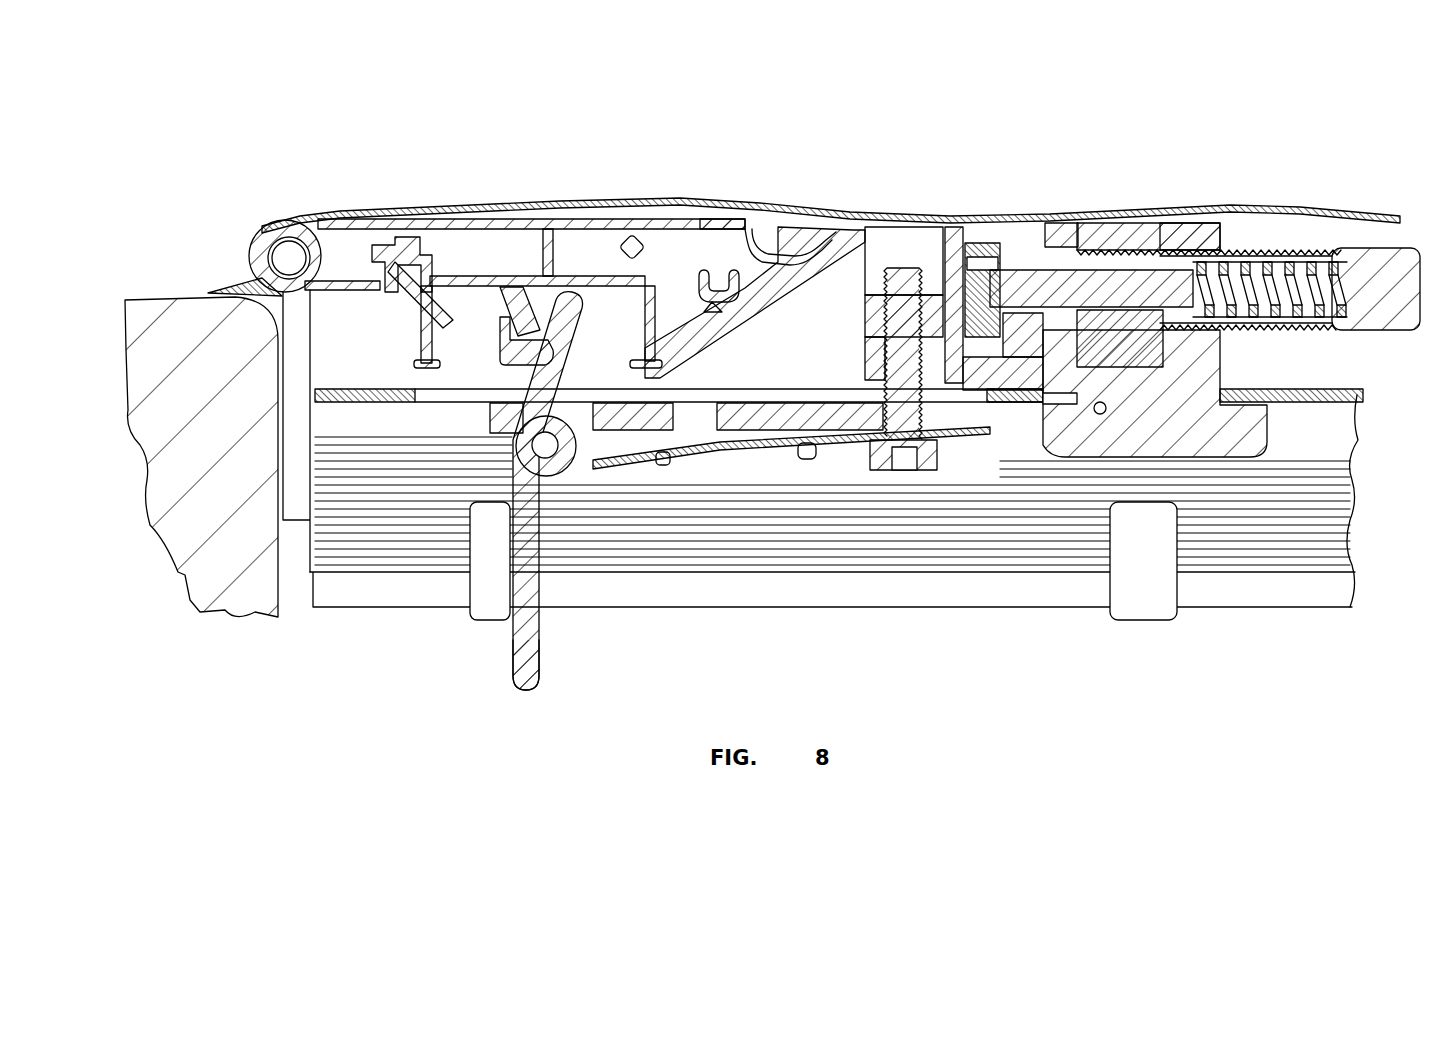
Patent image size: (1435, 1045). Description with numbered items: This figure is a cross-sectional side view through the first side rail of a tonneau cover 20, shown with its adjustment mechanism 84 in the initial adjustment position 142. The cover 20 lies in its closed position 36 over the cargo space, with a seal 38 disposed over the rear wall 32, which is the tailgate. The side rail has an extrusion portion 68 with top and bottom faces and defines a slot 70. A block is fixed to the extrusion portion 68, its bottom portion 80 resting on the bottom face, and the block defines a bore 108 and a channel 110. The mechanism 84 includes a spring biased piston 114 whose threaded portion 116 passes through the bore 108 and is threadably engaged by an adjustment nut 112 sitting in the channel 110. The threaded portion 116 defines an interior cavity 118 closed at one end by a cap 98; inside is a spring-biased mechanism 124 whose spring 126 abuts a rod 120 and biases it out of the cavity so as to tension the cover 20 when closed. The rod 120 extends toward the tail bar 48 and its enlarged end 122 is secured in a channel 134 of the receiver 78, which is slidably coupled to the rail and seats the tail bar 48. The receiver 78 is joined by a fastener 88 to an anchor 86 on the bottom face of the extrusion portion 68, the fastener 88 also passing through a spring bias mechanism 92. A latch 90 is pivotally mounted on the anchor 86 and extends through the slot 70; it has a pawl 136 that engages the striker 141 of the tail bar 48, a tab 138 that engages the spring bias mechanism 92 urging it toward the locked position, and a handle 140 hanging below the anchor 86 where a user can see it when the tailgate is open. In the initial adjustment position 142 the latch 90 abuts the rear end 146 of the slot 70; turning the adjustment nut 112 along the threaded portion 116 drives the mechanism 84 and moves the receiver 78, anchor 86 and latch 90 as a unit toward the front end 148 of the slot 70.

The tonneau cover 20 is at (853, 215).
The rear wall 32 is at (232, 573).
The closed position 36 is at (342, 190).
The seal 38 is at (236, 290).
The tail bar 48 is at (743, 228).
The extrusion portion 68 is at (372, 405).
The slot 70 is at (463, 400).
The receiver 78 is at (876, 252).
The bottom portion 80 is at (1242, 398).
The mechanism 84 is at (1012, 233).
The anchor 86 is at (752, 417).
The fastener 88 is at (923, 463).
The latch 90 is at (525, 492).
The spring bias mechanism 92 is at (713, 447).
The cap 98 is at (1375, 258).
The bore 108 is at (1062, 235).
The channel 110 is at (1115, 347).
The adjustment nut 112 is at (1145, 245).
The spring biased piston 114 is at (1117, 245).
The threaded portion 116 is at (1250, 265).
The interior cavity 118 is at (1320, 265).
The rod 120 is at (1036, 248).
The enlarged end 122 is at (975, 232).
The spring-biased mechanism 124 is at (1295, 268).
The spring 126 is at (1332, 292).
The channel 134 is at (1045, 425).
The pawl 136 is at (550, 305).
The tab 138 is at (593, 447).
The handle 140 is at (523, 643).
The striker 141 is at (517, 330).
The initial adjustment position 142 is at (397, 185).
The rear end 146 is at (960, 398).
The front end 148 is at (417, 405).